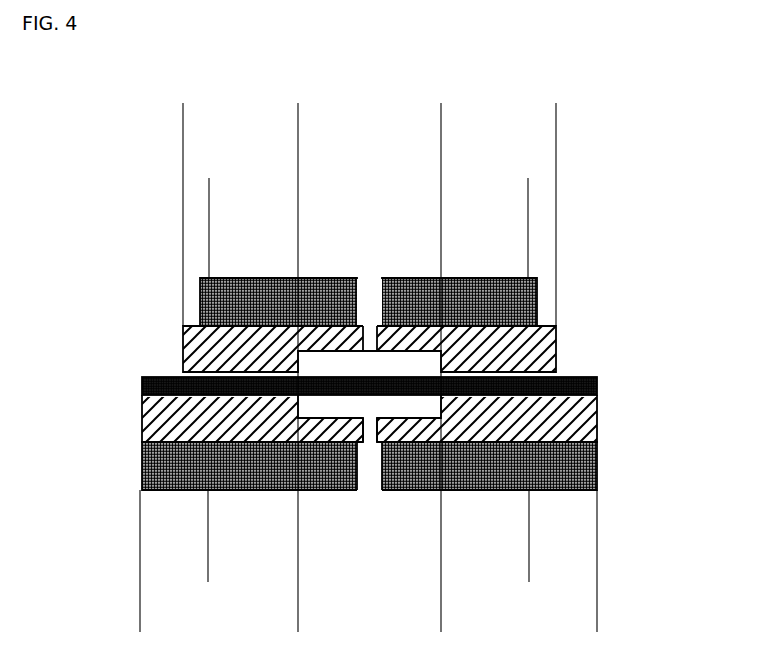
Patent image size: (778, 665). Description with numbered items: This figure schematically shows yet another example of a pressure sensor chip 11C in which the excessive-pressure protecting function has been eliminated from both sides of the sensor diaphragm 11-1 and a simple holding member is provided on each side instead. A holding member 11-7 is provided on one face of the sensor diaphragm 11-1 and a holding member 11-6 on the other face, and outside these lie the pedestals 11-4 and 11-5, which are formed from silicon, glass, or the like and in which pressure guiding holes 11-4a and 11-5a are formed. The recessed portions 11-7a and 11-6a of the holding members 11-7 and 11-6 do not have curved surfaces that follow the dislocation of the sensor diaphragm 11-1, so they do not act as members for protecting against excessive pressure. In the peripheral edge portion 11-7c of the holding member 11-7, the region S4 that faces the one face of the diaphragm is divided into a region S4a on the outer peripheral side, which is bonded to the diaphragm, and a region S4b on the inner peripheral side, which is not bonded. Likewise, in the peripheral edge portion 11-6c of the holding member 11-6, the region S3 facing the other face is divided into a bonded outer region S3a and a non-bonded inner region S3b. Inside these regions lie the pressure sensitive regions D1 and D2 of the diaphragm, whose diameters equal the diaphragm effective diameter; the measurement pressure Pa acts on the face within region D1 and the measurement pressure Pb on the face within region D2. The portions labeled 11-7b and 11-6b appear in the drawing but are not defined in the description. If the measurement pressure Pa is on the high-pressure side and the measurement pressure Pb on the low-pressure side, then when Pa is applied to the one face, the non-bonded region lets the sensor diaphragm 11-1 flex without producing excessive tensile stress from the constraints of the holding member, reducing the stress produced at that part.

The pressure sensor chip 11C is at (567, 250).
The sensor diaphragm 11-1 is at (598, 384).
The pedestal 11-4 is at (538, 287).
The pressure guiding hole 11-4a is at (354, 283).
The pedestal 11-5 is at (156, 478).
The pressure guiding hole 11-5a is at (360, 472).
The holding member 11-6 is at (598, 424).
The recessed portion 11-6a is at (371, 433).
The thin portion of lower bonding layer 11-6b is at (351, 432).
The peripheral edge portion 11-6c is at (220, 425).
The holding member 11-7 is at (557, 338).
The recessed portion 11-7a is at (366, 338).
The thin portion of upper bonding layer 11-7b is at (332, 342).
The peripheral edge portion 11-7c is at (233, 366).
The measurement pressure Pa is at (369, 252).
The measurement pressure Pb is at (367, 515).
The region facing the one face of the sensor diaphragm S4 is at (298, 127).
The bonded region on the outer peripheral side S4a is at (198, 175).
The non-bonded region on the inner peripheral side S4b is at (298, 183).
The pressure sensitive region D1 is at (441, 127).
The region facing the other face of the sensor diaphragm S3 is at (298, 618).
The bonded region on the outer peripheral side S3a is at (208, 570).
The non-bonded region on the inner peripheral side S3b is at (298, 570).
The pressure sensitive region D2 is at (441, 618).